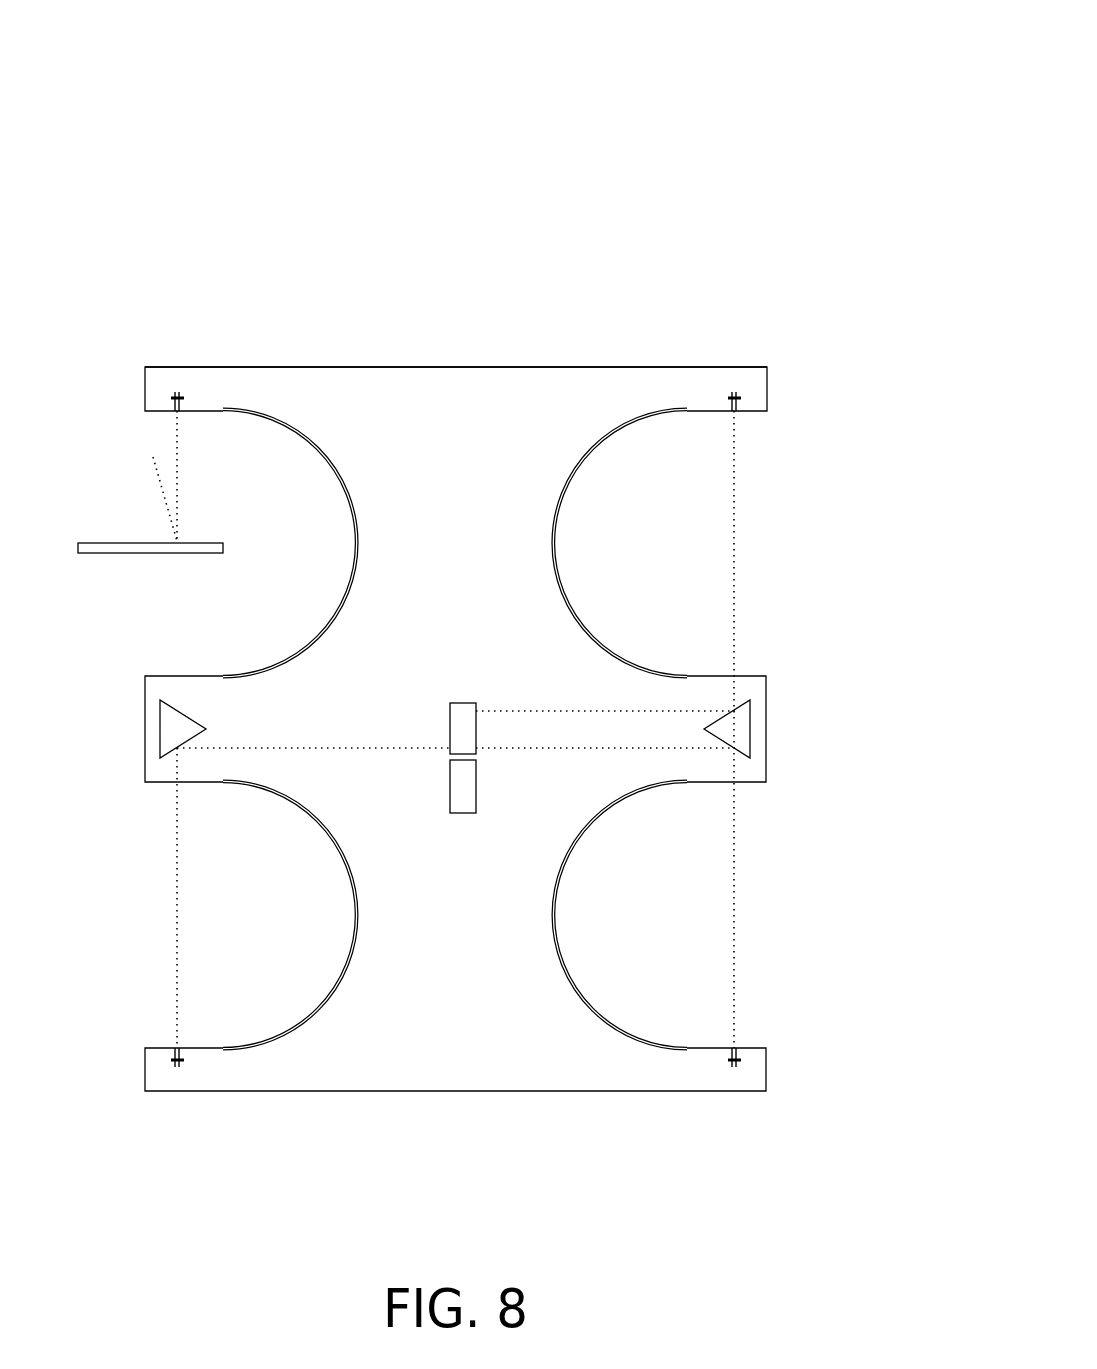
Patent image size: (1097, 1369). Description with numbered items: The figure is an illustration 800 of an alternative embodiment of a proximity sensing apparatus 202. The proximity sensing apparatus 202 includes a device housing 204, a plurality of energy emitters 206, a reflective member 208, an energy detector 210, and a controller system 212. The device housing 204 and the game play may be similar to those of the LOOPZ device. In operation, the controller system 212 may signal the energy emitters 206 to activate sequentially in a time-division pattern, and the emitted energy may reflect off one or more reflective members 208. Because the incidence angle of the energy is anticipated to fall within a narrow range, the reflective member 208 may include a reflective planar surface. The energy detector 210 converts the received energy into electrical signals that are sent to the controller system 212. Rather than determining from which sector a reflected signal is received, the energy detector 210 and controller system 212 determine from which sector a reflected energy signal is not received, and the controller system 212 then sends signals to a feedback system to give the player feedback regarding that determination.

The illustration 800 is at (802, 57).
The proximity sensing apparatus 202 is at (689, 317).
The device housing 204 is at (409, 366).
The energy emitters 206 is at (184, 388).
The reflective member 208 is at (752, 715).
The energy detector 210 is at (471, 702).
The controller system 212 is at (479, 801).